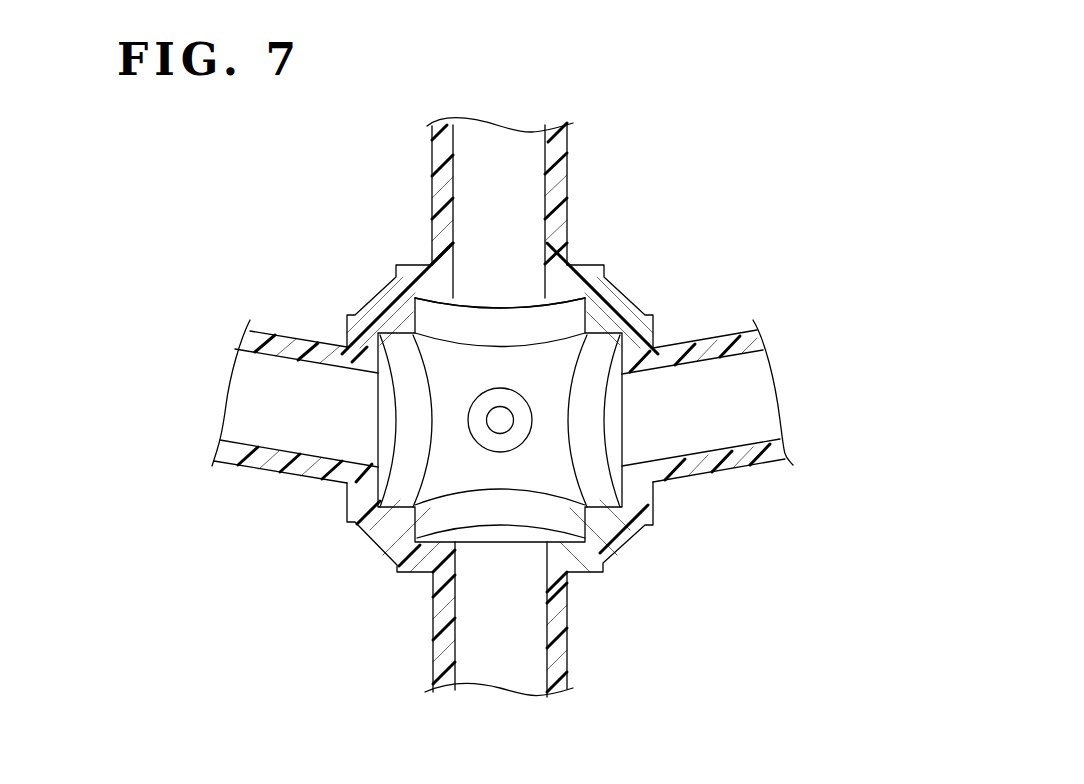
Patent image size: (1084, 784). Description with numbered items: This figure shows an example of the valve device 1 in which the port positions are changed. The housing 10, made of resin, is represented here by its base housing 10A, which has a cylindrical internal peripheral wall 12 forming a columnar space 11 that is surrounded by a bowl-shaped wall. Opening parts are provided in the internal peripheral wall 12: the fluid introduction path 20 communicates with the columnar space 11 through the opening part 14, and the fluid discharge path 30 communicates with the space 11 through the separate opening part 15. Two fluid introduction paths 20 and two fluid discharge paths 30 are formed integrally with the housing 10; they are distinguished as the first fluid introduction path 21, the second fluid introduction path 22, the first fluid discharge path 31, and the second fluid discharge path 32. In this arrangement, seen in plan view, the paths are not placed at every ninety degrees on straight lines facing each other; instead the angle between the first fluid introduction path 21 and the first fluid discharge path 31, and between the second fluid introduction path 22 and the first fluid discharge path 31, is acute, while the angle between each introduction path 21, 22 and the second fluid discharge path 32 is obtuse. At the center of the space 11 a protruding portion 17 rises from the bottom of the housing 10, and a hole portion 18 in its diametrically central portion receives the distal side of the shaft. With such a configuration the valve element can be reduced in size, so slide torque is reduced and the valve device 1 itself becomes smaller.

The valve device 1 is at (243, 163).
The housing 10 is at (560, 417).
The base housing 10A is at (660, 513).
The columnar space 11 is at (553, 330).
The internal peripheral wall 12 is at (412, 545).
The opening part 14 is at (385, 407).
The opening part 15 is at (486, 303).
The protruding portion 17 is at (477, 413).
The hole portion 18 is at (500, 417).
The fluid introduction path 20 is at (501, 401).
The first fluid introduction path 21 is at (238, 392).
The second fluid introduction path 22 is at (760, 392).
The fluid discharge path 30 is at (555, 424).
The first fluid discharge path 31 is at (512, 160).
The second fluid discharge path 32 is at (520, 658).